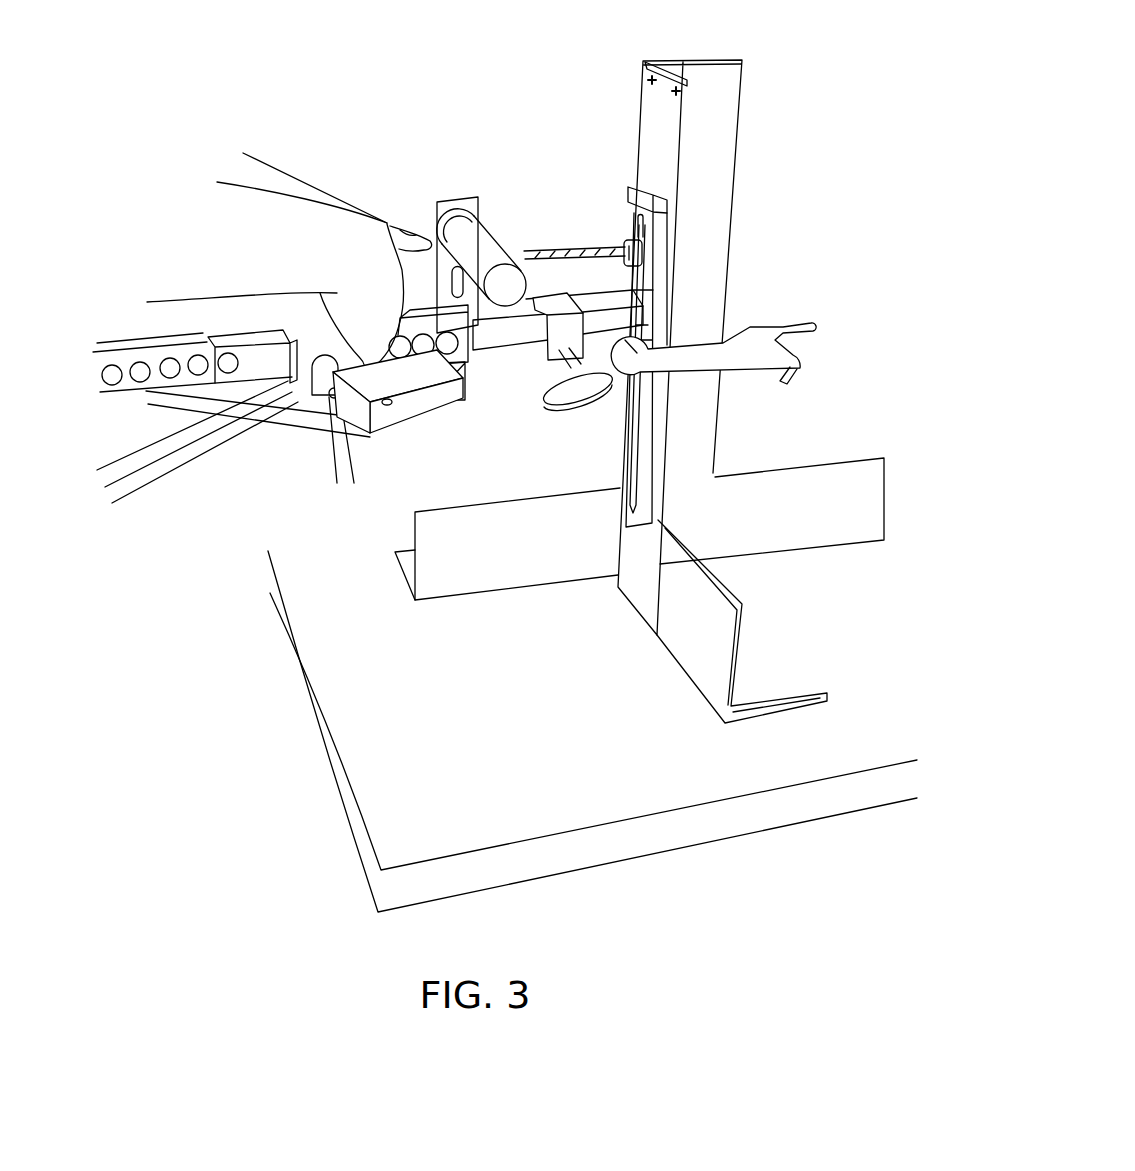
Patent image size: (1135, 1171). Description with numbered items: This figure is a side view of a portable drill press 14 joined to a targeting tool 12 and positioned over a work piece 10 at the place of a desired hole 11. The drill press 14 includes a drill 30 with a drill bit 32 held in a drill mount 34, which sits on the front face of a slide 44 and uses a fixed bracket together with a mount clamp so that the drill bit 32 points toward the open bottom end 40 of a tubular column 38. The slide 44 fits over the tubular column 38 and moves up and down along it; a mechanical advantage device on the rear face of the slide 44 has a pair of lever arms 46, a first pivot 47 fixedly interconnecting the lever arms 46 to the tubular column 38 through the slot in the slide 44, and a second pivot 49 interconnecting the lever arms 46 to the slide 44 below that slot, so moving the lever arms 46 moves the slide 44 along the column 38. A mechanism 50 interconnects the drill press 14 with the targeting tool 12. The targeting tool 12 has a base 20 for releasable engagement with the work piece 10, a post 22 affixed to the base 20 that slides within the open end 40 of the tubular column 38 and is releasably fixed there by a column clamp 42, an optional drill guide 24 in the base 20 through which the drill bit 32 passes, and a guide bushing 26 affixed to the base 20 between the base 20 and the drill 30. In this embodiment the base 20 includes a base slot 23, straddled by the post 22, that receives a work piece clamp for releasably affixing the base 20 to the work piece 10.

The work piece 10 is at (720, 152).
The desired hole 11 is at (651, 76).
The targeting tool 12 is at (662, 278).
The portable drill press 14 is at (349, 179).
The base 20 is at (660, 297).
The post 22 is at (648, 325).
The base slot 23 is at (622, 528).
The drill guide 24 is at (645, 241).
The guide bushing 26 is at (644, 262).
The drill 30 is at (430, 232).
The drill bit 32 is at (596, 250).
The drill mount 34 is at (467, 191).
The tubular column 38 is at (523, 340).
The open bottom end 40 is at (597, 335).
The column clamp 42 is at (553, 390).
The slide 44 is at (459, 360).
The lever arms 46 is at (488, 240).
The first pivot 47 is at (253, 398).
The second pivot 49 is at (434, 388).
The mechanism for interconnecting 50 is at (607, 278).